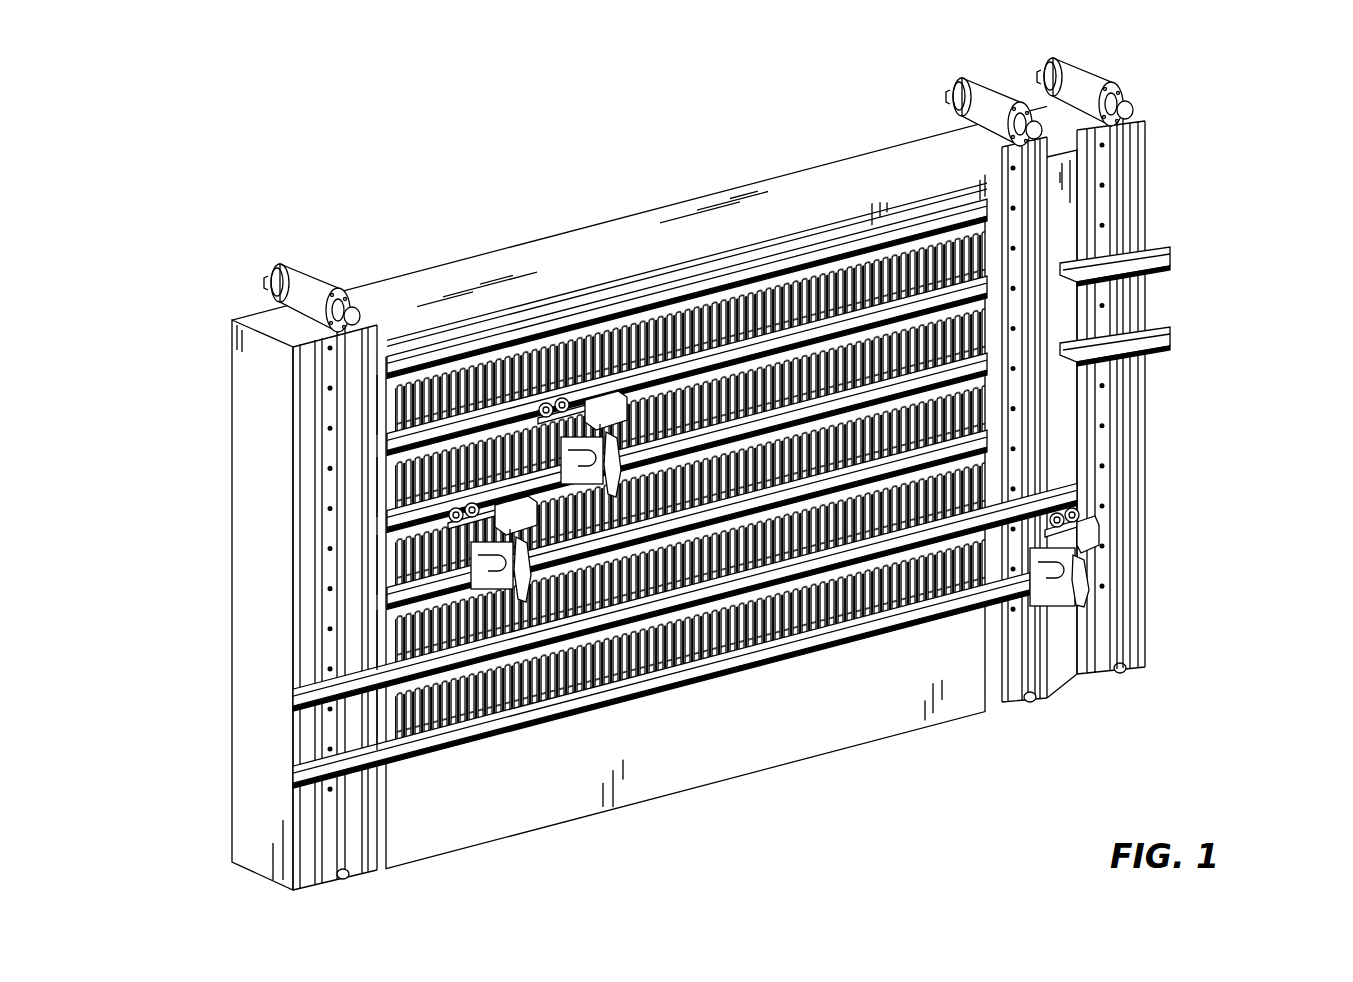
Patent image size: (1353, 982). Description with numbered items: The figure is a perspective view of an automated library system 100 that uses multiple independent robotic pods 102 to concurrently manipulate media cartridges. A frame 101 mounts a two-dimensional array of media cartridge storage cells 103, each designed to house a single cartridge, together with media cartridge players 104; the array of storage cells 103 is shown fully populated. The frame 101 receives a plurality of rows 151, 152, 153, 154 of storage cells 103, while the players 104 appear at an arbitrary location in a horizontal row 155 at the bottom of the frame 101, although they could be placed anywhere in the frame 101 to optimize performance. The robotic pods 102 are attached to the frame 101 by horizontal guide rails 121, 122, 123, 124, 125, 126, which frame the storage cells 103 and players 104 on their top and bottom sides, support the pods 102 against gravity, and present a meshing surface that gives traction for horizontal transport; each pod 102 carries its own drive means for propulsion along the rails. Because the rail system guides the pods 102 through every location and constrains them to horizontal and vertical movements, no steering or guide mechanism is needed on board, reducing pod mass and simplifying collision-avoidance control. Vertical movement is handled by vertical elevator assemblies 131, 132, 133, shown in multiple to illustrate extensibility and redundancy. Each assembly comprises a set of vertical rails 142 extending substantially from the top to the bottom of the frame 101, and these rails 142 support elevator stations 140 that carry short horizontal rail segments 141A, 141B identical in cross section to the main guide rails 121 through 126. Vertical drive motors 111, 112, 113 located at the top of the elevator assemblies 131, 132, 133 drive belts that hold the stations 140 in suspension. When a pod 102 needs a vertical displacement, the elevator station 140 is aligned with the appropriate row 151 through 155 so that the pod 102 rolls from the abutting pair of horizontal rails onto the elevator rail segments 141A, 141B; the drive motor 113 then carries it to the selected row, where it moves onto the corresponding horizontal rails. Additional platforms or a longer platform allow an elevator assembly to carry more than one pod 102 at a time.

The automated library system 100 is at (362, 195).
The frame 101 is at (537, 248).
The robotic pod 102 is at (1098, 568).
The media cartridge storage cell 103 is at (612, 348).
The media cartridge player 104 is at (695, 662).
The vertical drive motor 111 is at (317, 270).
The vertical drive motor 112 is at (987, 128).
The vertical drive motor 113 is at (1088, 82).
The horizontal guide rail 121 is at (385, 358).
The horizontal guide rail 122 is at (385, 445).
The horizontal guide rail 123 is at (385, 520).
The horizontal guide rail 124 is at (385, 597).
The horizontal guide rail 125 is at (293, 686).
The horizontal guide rail 126 is at (293, 765).
The vertical elevator assembly 131 is at (357, 888).
The vertical elevator assembly 132 is at (1020, 710).
The vertical elevator assembly 133 is at (1108, 688).
The elevator station 140 is at (1283, 270).
The short horizontal rail segment 141A is at (1168, 250).
The short horizontal rail segment 141B is at (1168, 338).
The vertical rail 142 is at (1140, 433).
The row of media cartridge storage cells 151 is at (376, 404).
The row of media cartridge storage cells 152 is at (376, 487).
The row of media cartridge storage cells 153 is at (376, 565).
The row of media cartridge storage cells 154 is at (376, 640).
The horizontal row of media cartridge players 155 is at (376, 720).